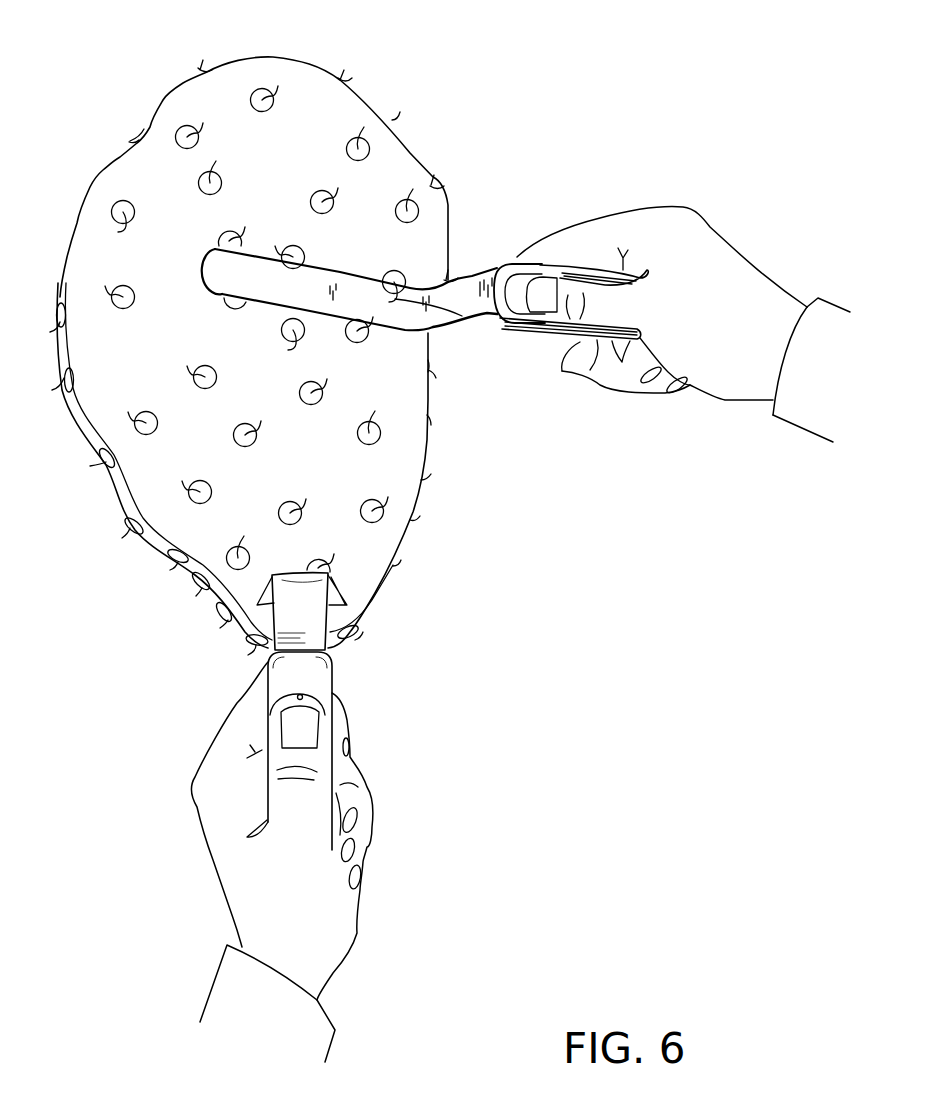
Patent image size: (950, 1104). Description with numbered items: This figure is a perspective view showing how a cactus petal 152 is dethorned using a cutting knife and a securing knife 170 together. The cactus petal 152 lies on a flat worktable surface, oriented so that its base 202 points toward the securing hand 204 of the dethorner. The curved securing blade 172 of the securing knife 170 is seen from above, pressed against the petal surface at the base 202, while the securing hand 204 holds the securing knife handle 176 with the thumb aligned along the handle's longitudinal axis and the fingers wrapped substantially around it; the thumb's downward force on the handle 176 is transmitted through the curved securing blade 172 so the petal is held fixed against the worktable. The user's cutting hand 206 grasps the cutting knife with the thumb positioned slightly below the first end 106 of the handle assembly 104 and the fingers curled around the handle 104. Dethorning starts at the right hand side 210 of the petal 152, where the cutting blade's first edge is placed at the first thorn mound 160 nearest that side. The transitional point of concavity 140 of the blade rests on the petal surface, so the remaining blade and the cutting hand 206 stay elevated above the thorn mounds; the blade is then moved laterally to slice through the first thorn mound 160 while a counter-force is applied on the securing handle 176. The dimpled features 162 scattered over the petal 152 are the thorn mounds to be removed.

The cactus petal 152 is at (233, 53).
The suction cup protrusions 162 is at (117, 203).
The base of the cactus petal 202 is at (240, 590).
The transitional point of concavity 140 is at (413, 332).
The first thorn mound 160 is at (465, 322).
The first end of the handle assembly 106 is at (507, 270).
The handle assembly 104 is at (593, 270).
The right hand side of the cactus petal 210 is at (430, 372).
The cutting hand 206 is at (700, 230).
The securing knife 170 is at (366, 711).
The curved securing blade 172 is at (308, 612).
The securing knife handle 176 is at (323, 697).
The securing hand 204 is at (203, 798).